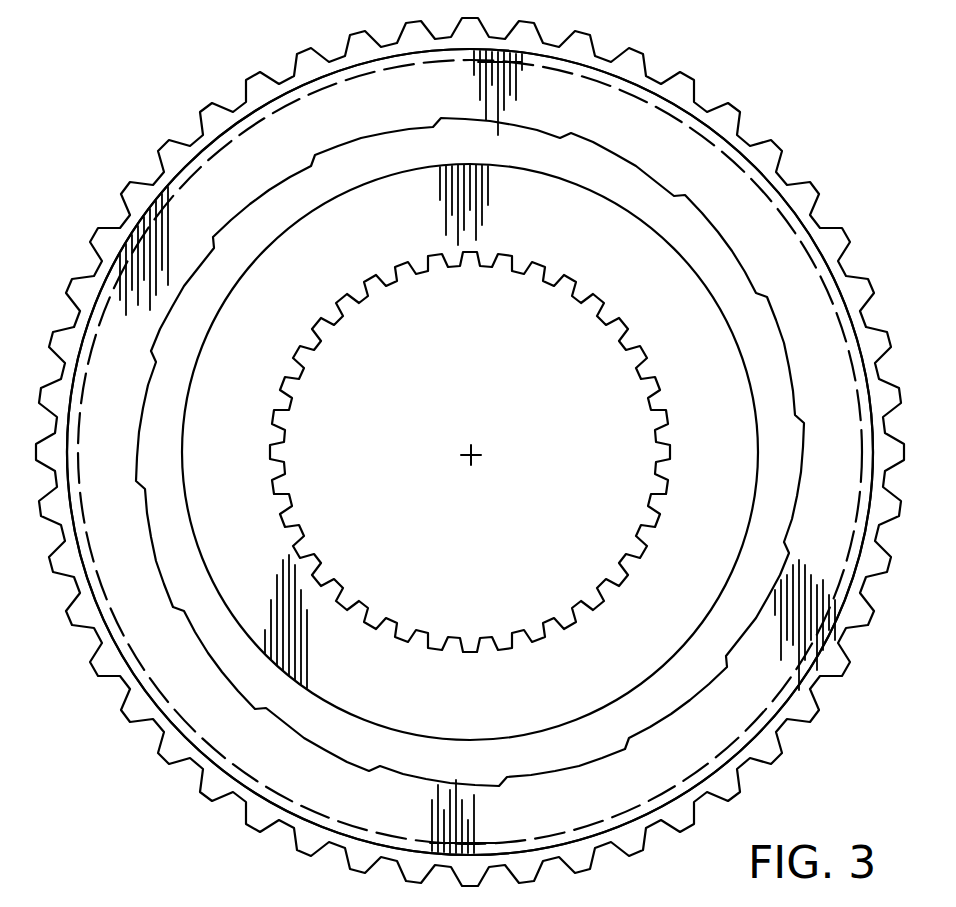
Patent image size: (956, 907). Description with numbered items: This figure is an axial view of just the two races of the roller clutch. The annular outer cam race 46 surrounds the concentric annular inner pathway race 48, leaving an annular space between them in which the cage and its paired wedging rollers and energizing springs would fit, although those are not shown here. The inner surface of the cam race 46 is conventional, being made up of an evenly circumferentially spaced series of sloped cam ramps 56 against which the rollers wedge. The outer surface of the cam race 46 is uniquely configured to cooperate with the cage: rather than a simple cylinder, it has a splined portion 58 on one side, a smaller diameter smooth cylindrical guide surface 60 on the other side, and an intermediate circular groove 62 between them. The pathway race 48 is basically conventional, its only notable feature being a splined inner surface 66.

The outer cam race 46 is at (160, 721).
The inner pathway race 48 is at (334, 720).
The sloped cam ramps 56 is at (273, 196).
The splined portion 58 is at (648, 58).
The smooth cylindrical guide surface 60 is at (262, 86).
The circular groove 62 is at (790, 208).
The splined inner surface 66 is at (548, 290).